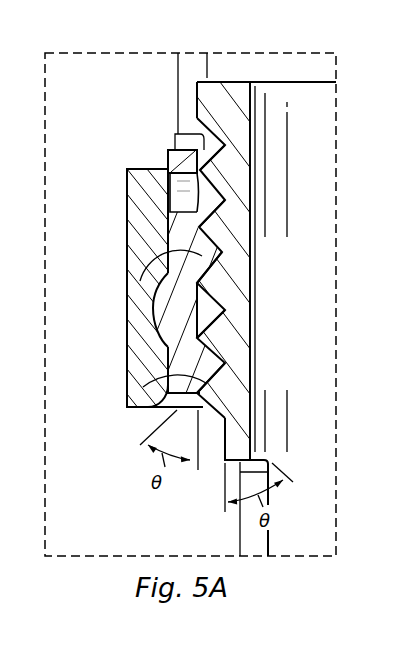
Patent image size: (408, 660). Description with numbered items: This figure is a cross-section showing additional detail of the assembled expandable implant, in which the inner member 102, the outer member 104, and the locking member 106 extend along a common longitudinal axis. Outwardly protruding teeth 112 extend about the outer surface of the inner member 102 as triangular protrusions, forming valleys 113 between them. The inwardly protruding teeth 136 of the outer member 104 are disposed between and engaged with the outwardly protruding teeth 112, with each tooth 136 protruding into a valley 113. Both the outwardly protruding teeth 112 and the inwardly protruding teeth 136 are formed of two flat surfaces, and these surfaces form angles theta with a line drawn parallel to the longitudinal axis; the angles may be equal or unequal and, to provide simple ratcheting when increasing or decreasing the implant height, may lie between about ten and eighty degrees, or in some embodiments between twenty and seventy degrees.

The inner member 102 is at (197, 92).
The outer member 104 is at (167, 157).
The locking member 106 is at (125, 221).
The outwardly protruding teeth 112 is at (200, 282).
The valleys 113 is at (225, 258).
The inwardly protruding teeth 136 is at (140, 281).